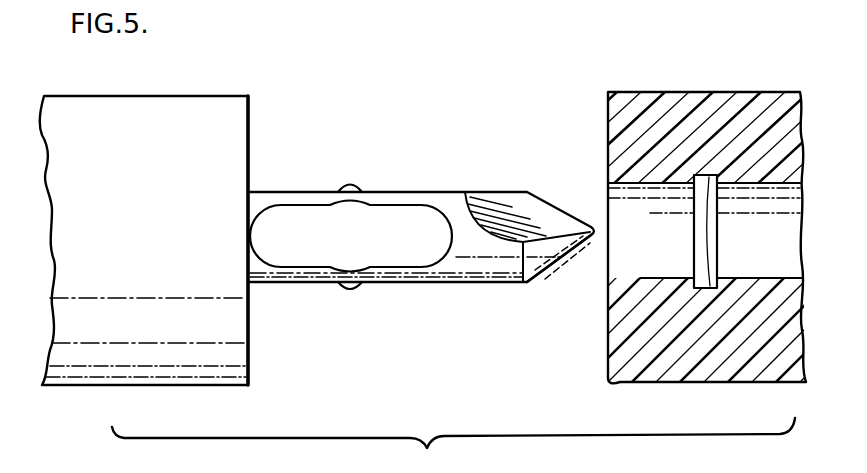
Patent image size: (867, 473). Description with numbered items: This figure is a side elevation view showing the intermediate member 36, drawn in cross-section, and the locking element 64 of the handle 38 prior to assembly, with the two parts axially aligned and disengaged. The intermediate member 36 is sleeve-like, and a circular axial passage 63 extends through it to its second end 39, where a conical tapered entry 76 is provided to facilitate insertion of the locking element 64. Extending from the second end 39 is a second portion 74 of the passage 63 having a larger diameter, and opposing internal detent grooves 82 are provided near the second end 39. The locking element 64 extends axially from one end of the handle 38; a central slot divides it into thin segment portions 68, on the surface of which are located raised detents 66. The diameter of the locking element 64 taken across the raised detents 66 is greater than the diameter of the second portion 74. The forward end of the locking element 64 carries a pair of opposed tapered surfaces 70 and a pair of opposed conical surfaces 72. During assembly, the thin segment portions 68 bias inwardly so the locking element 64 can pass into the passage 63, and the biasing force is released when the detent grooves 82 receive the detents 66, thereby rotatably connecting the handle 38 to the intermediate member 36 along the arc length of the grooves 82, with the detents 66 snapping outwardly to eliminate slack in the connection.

The intermediate member 36 is at (668, 220).
The handle 38 is at (220, 96).
The second end 39 is at (607, 120).
The axial passage 63 is at (650, 238).
The locking element 64 is at (520, 308).
The raised detents 66 is at (352, 187).
The thin segment portions 68 is at (430, 192).
The tapered surfaces 70 is at (540, 222).
The conical surfaces 72 is at (553, 255).
The second portion 74 is at (672, 185).
The tapered entry 76 is at (640, 183).
The detent grooves 82 is at (718, 222).